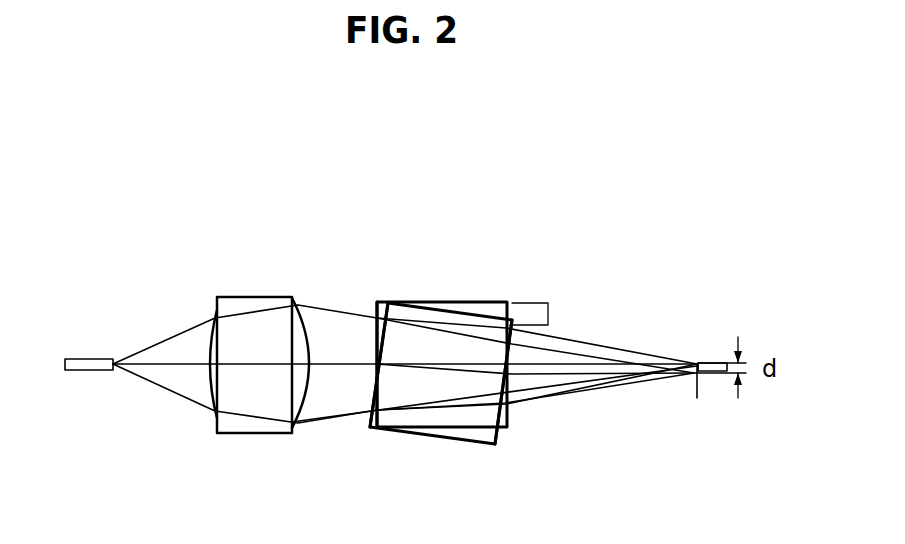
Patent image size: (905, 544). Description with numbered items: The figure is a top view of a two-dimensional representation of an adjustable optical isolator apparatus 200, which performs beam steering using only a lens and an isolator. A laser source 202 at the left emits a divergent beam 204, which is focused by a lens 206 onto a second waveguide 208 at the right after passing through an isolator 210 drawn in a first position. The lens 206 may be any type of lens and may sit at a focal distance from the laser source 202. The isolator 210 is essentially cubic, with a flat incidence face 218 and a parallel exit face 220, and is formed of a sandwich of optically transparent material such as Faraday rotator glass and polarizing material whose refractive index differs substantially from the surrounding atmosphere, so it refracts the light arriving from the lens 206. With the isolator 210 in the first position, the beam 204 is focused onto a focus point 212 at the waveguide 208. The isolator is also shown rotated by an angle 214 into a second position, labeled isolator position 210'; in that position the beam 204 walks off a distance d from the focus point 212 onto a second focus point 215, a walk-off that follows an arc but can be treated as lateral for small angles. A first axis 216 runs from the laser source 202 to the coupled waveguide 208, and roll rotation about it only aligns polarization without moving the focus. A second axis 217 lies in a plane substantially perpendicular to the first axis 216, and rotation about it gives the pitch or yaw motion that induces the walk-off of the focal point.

The adjustable optical isolator apparatus 200 is at (381, 174).
The laser source 202 is at (115, 372).
The divergent beam 204 is at (152, 345).
The lens 206 is at (256, 433).
The second waveguide 208 is at (711, 362).
The isolator 210 is at (446, 330).
The isolator position 210' is at (441, 407).
The focus point 212 is at (698, 363).
The angle 214 is at (548, 313).
The second focus point 215 is at (696, 378).
The first axis 216 is at (178, 366).
The second axis 217 is at (377, 364).
The incidence face 218 is at (370, 430).
The exit face 220 is at (508, 405).